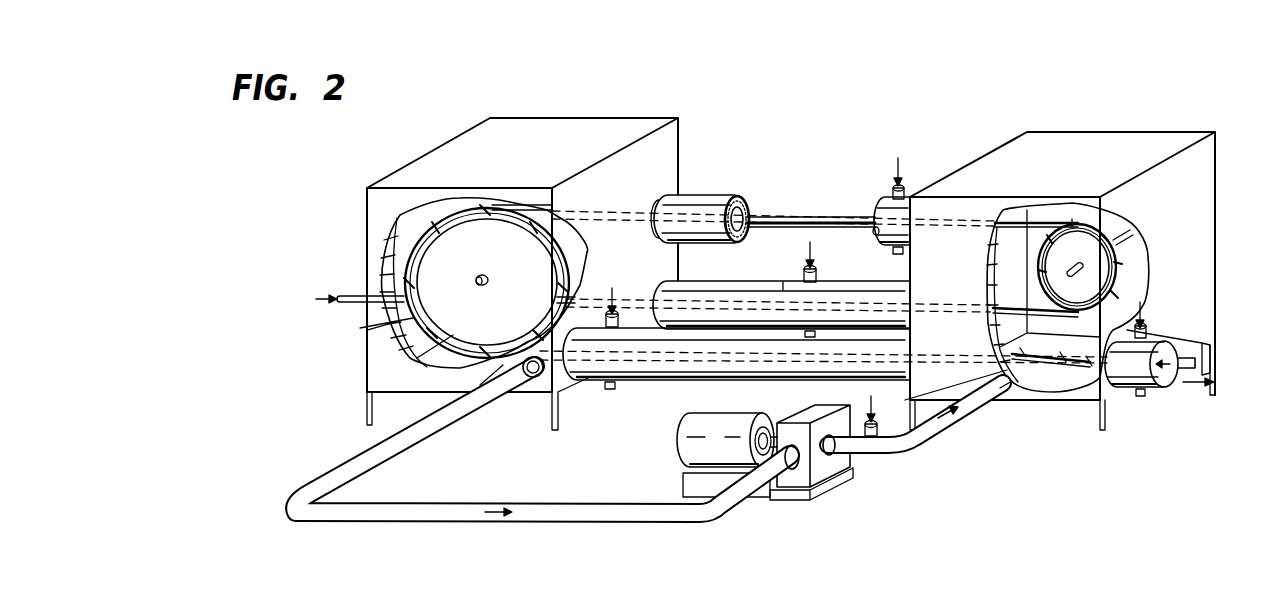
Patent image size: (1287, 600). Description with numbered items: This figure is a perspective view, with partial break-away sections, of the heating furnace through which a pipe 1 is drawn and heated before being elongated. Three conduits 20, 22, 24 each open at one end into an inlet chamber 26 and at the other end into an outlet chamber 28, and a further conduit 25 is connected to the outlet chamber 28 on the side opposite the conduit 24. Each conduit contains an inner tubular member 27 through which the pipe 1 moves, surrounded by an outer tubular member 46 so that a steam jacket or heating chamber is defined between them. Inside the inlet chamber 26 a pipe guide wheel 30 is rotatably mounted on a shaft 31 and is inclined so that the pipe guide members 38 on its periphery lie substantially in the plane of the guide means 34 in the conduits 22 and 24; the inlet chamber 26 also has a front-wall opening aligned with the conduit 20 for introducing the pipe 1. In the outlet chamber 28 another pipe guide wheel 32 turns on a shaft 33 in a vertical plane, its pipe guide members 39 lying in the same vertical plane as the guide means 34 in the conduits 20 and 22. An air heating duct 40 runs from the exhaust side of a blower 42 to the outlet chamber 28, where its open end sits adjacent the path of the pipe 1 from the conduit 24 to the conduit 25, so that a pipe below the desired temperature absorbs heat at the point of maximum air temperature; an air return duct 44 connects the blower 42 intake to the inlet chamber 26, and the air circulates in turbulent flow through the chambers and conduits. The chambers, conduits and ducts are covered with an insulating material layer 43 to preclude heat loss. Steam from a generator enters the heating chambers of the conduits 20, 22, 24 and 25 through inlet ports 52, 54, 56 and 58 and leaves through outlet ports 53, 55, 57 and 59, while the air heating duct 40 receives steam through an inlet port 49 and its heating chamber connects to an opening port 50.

The pipe 1 is at (355, 295).
The conduit 20 is at (755, 290).
The conduit 22 is at (675, 200).
The conduit 24 is at (653, 365).
The conduit 25 is at (1155, 347).
The inlet chamber 26 is at (533, 135).
The inner tubular member 27 is at (748, 216).
The outlet chamber 28 is at (1085, 160).
The pipe guide wheel 30 is at (437, 272).
The shaft 31 is at (478, 278).
The pipe guide wheel 32 is at (1093, 280).
The shaft 33 is at (1113, 240).
The guide means 34 is at (865, 295).
The pipe guide members 38 is at (440, 238).
The pipe guide members 39 is at (1118, 223).
The air heating duct 40 is at (915, 430).
The blower 42 is at (727, 433).
The insulating material layer 43 is at (710, 195).
The air return duct 44 is at (338, 475).
The outer tubular member 46 is at (735, 200).
The inlet port 49 is at (871, 440).
The opening port 50 is at (985, 410).
The inlet port 52 is at (838, 295).
The outlet port 53 is at (785, 290).
The inlet port 54 is at (942, 247).
The outlet port 55 is at (978, 260).
The inlet port 56 is at (607, 340).
The outlet port 57 is at (607, 392).
The inlet port 58 is at (1148, 330).
The outlet port 59 is at (1150, 395).